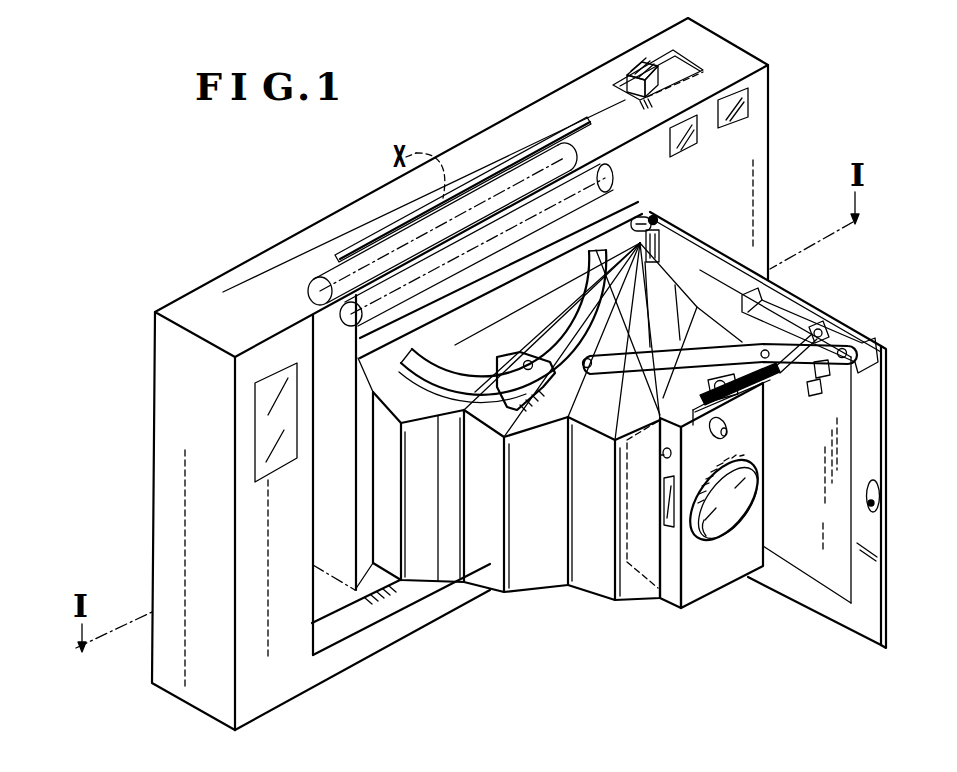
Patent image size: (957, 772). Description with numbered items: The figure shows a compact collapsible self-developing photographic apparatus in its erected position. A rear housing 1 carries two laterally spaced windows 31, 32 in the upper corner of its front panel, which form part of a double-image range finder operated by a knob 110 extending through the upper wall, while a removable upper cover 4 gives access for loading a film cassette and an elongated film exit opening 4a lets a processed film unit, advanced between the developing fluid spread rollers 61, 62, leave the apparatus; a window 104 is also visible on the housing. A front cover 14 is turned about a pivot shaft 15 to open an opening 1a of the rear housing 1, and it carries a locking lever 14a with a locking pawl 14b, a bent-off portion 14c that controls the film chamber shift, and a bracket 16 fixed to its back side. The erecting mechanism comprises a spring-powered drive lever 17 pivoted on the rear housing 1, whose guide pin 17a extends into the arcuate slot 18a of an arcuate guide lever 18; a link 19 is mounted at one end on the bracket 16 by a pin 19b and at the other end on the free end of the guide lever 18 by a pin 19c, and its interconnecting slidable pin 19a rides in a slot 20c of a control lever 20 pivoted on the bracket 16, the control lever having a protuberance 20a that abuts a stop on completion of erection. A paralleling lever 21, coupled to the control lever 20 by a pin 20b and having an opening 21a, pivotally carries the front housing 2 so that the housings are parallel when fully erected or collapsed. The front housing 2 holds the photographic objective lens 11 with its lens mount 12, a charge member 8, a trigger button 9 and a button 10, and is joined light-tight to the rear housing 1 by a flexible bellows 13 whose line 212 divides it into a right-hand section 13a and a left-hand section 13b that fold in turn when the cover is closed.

The rear housing 1 is at (285, 673).
The opening of the rear housing 1a is at (352, 630).
The front housing 2 is at (743, 571).
The upper cover 4 is at (538, 116).
The film exit opening 4a is at (505, 167).
The charge member 8 is at (664, 500).
The trigger button 9 is at (662, 456).
The button 10 is at (733, 432).
The photographic objective lens 11 is at (738, 498).
The lens mount 12 is at (706, 537).
The flexible bellows 13 is at (550, 531).
The right-hand section of the bellows 13a is at (683, 305).
The left-hand section of the bellows 13b is at (438, 568).
The front cover 14 is at (866, 606).
The locking lever 14a is at (826, 373).
The locking pawl 14b is at (880, 493).
The bent-off portion 14c is at (647, 210).
The pivot shaft 15 is at (660, 222).
The bracket 16 is at (878, 354).
The spring-powered drive lever 17 is at (600, 303).
The guide pin 17a is at (528, 395).
The arcuate guide lever 18 is at (466, 395).
The arcuate slot 18a is at (460, 383).
The link 19 is at (832, 343).
The interconnecting slidable pin 19a is at (767, 350).
The pin 19b is at (868, 344).
The pin 19c is at (589, 370).
The control lever 20 is at (756, 373).
The protuberance 20a is at (814, 392).
The pin 20b is at (744, 388).
The slot 20c is at (802, 338).
The paralleling lever 21 is at (710, 462).
The opening 21a is at (737, 413).
The window 31 is at (745, 103).
The window 32 is at (687, 140).
The developing fluid spread roller 61 is at (350, 324).
The developing fluid spread roller 62 is at (318, 291).
The window 104 is at (265, 422).
The knob 110 is at (641, 62).
The line 212 is at (640, 302).